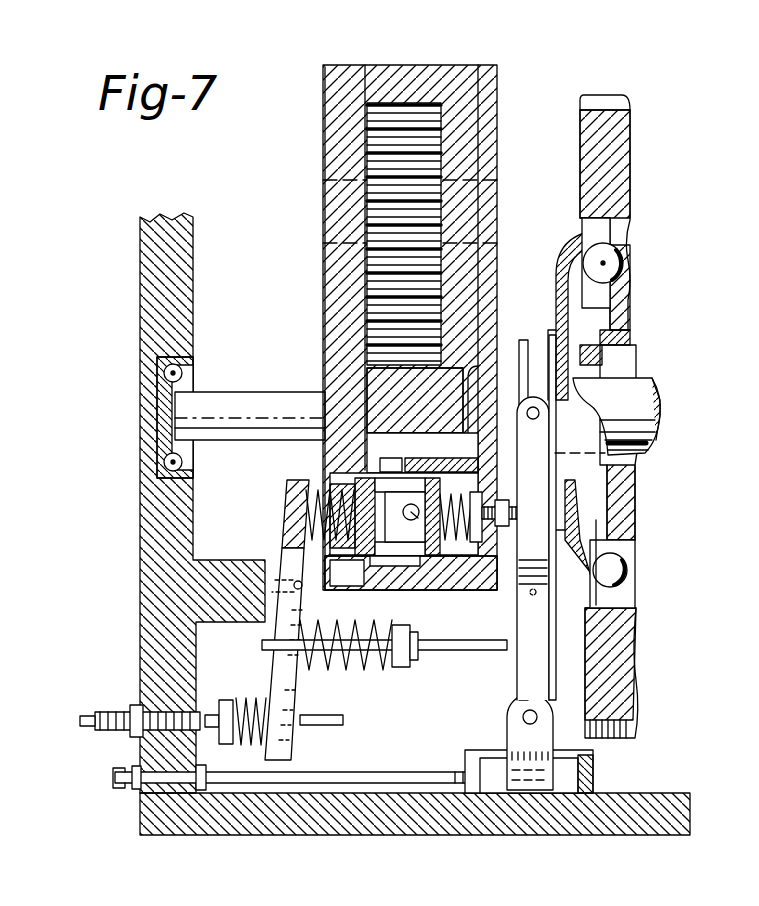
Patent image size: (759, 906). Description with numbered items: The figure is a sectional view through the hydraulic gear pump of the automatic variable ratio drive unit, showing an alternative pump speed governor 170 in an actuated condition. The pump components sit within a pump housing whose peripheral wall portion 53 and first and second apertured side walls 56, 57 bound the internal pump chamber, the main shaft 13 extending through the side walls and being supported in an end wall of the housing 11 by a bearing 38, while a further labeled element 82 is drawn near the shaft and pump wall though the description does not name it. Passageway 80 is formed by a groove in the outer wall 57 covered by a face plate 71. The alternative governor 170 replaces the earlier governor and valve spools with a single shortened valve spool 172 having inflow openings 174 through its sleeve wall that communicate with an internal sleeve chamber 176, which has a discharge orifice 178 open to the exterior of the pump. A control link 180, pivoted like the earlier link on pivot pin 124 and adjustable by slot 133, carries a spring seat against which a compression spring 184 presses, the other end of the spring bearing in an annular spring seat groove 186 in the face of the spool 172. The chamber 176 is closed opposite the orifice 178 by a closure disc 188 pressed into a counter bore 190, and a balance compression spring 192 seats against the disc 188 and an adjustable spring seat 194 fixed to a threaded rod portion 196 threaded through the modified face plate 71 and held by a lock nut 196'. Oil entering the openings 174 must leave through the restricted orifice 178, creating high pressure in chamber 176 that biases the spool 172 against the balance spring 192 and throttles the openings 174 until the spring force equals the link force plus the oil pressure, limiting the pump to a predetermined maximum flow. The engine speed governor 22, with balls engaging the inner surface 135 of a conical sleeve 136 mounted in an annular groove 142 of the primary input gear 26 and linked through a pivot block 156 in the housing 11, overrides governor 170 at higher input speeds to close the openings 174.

The housing 11 is at (418, 826).
The main shaft 13 is at (655, 392).
The engine speed governor 22 is at (575, 580).
The primary input gear 26 is at (625, 172).
The bearing 38 is at (172, 411).
The peripheral wall portion 53 is at (434, 68).
The first apertured side wall 56 is at (326, 148).
The second apertured side wall 57 is at (455, 128).
The face plate 71 is at (478, 575).
The passageway 80 is at (462, 404).
The shaft 82 is at (375, 470).
The pivot pin 124 is at (293, 586).
The slot 133 is at (324, 716).
The inner surface 135 is at (598, 241).
The conical sleeve 136 is at (562, 268).
The annular groove 142 is at (606, 605).
The slidable pivot block 156 is at (526, 795).
The alternative pump speed governor 170 is at (262, 496).
The shortened valve spool 172 is at (340, 480).
The inflow openings 174 is at (413, 519).
The internal sleeve chamber 176 is at (390, 472).
The discharge orifice 178 is at (411, 573).
The control link 180 is at (292, 658).
The compression spring 184 is at (286, 526).
The annular spring seat groove 186 is at (320, 490).
The closure disc 188 is at (440, 470).
The counter bore 190 is at (405, 568).
The balance compression spring 192 is at (446, 575).
The adjustable spring seat 194 is at (468, 592).
The threaded rod portion 196 is at (597, 502).
The lock nut 196' is at (632, 518).